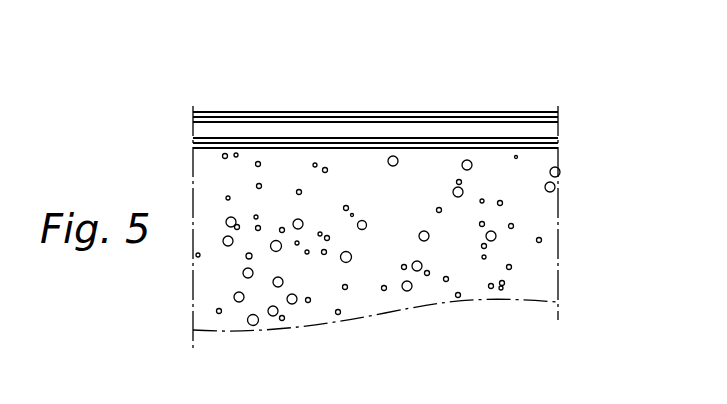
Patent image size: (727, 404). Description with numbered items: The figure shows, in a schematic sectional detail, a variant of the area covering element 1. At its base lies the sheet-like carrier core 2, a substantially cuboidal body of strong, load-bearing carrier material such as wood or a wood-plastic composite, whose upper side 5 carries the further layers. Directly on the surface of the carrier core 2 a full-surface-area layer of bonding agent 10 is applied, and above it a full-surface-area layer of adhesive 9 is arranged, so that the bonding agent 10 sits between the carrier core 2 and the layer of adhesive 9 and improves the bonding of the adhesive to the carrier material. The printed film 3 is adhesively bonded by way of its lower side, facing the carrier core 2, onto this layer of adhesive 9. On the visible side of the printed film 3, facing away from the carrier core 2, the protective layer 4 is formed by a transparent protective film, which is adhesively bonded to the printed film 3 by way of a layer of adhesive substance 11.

The area covering element 1 is at (183, 96).
The sheet-like carrier core 2 is at (368, 247).
The printed film 3 is at (271, 135).
The protective layer 4 is at (355, 124).
The upper side 5 is at (443, 148).
The layer of adhesive 9 is at (530, 137).
The layer of bonding agent 10 is at (558, 147).
The layer of adhesive substance 11 is at (522, 118).